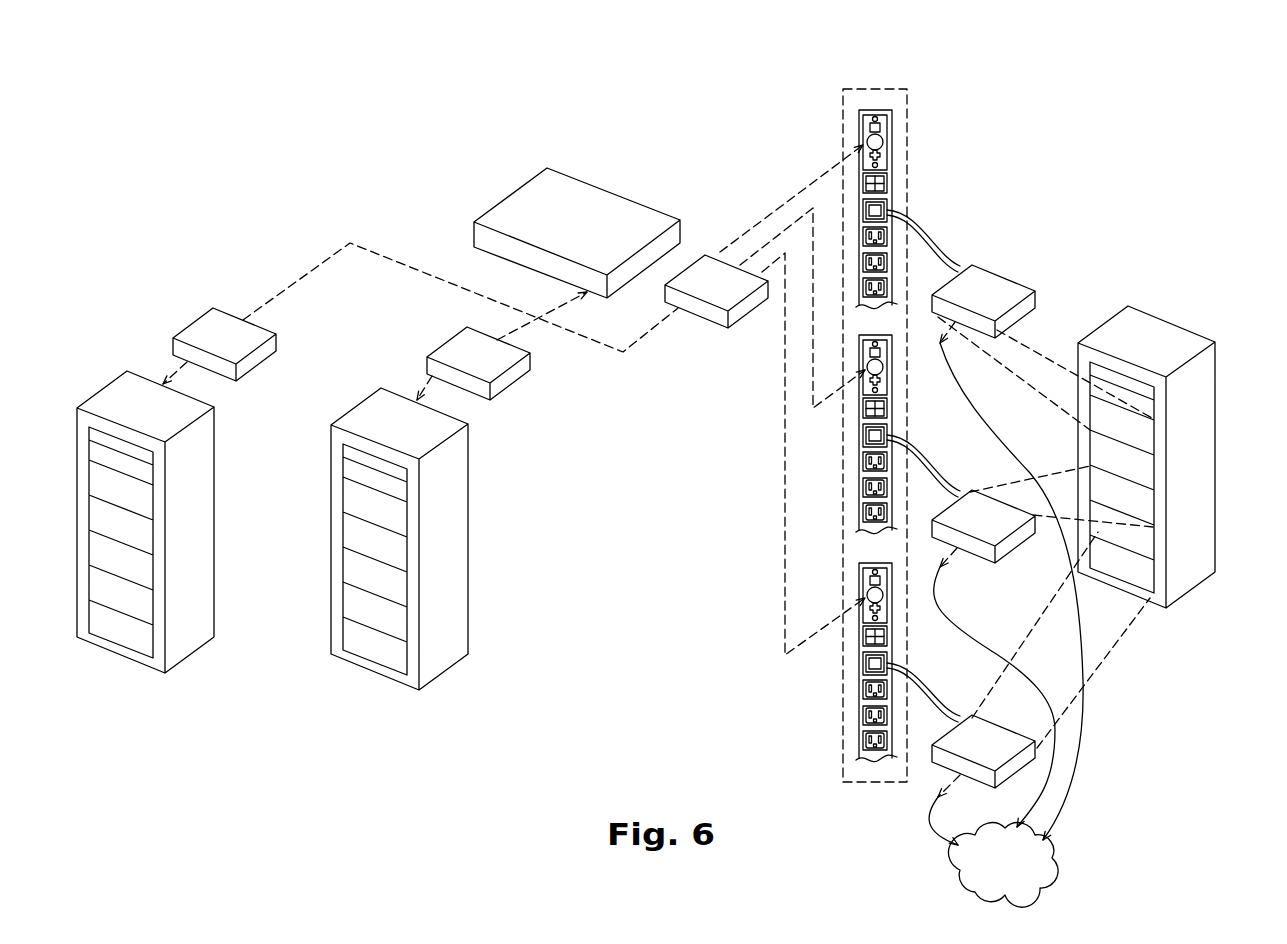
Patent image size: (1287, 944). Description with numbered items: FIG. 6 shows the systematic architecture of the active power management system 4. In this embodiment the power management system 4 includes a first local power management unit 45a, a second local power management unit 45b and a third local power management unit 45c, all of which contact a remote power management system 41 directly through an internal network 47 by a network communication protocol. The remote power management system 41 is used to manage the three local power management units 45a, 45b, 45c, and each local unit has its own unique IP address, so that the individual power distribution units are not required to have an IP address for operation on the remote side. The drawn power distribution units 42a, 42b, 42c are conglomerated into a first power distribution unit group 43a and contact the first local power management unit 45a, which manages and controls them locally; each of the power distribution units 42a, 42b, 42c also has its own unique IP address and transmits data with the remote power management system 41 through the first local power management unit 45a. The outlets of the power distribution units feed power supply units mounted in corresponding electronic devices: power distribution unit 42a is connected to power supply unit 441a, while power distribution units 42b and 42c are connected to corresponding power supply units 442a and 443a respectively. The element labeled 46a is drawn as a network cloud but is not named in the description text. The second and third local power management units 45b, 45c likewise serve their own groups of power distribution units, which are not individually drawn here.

The power management system 4 is at (1268, 163).
The remote power management system 41 is at (530, 213).
The power distribution unit 42a is at (882, 110).
The power distribution unit 42b is at (858, 425).
The power distribution unit 42c is at (856, 688).
The first power distribution unit group 43a is at (848, 85).
The power supply unit 441a is at (982, 283).
The power supply unit 442a is at (998, 522).
The power supply unit 443a is at (1008, 722).
The first local power management unit 45a is at (700, 308).
The second local power management unit 45b is at (502, 380).
The third local power management unit 45c is at (247, 363).
The network cloud 46a is at (1057, 865).
The internal network 47 is at (583, 294).